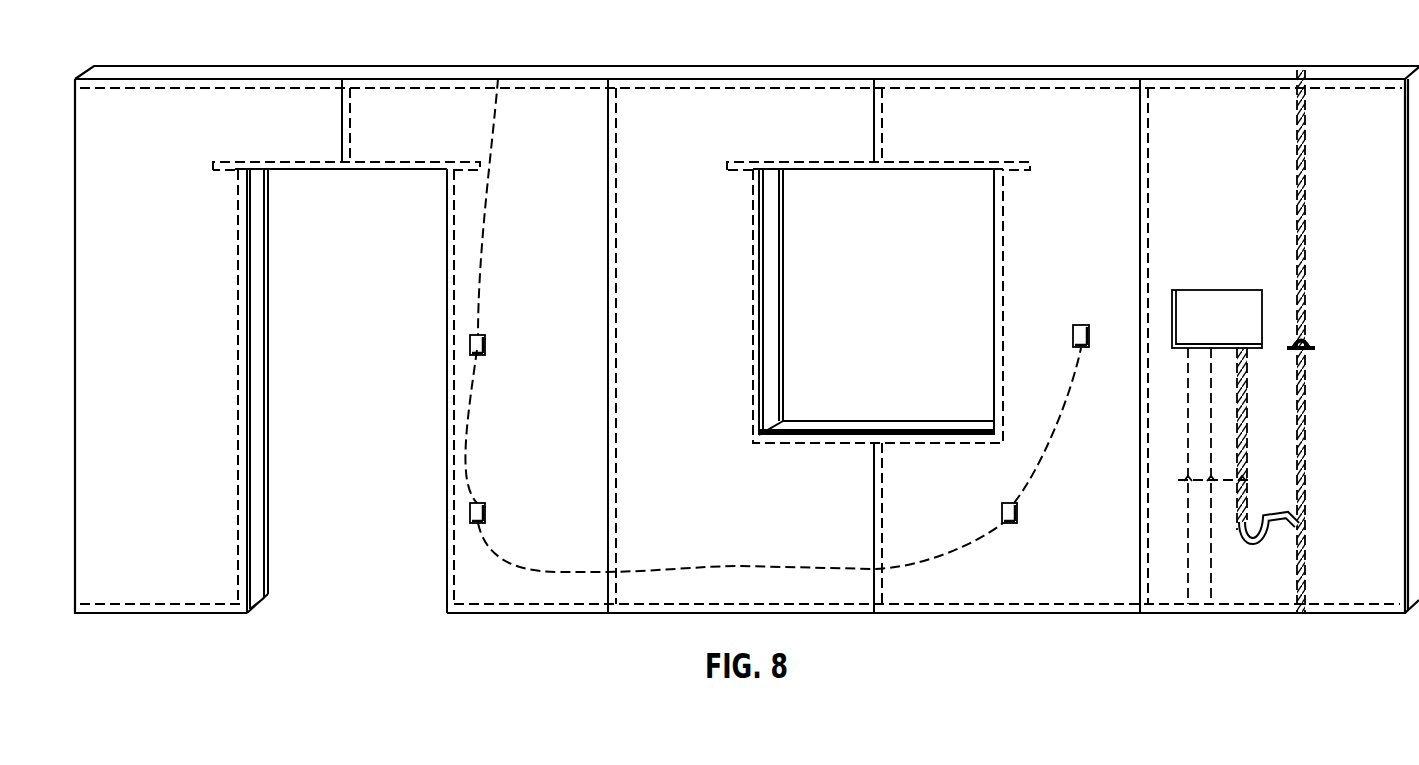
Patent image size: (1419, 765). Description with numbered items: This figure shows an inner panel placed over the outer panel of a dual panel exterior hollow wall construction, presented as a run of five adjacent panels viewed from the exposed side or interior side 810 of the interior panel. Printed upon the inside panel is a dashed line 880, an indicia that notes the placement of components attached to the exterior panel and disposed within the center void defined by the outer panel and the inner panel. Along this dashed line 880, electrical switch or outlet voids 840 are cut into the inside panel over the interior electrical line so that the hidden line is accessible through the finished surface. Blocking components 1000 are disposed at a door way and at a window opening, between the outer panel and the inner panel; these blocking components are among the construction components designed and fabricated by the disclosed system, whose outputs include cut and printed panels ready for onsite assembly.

The exposed side of interior panel 810 is at (1378, 229).
The electrical switch or outlet void 840 is at (1082, 325).
The dashed line indicia 880 is at (697, 565).
The blocking component 1000 is at (258, 450).